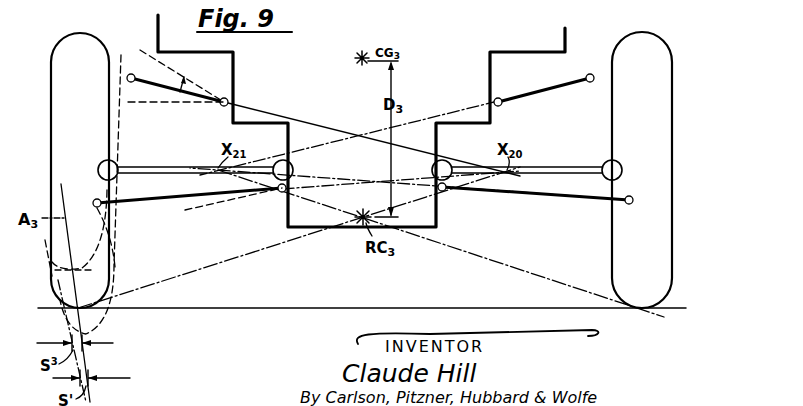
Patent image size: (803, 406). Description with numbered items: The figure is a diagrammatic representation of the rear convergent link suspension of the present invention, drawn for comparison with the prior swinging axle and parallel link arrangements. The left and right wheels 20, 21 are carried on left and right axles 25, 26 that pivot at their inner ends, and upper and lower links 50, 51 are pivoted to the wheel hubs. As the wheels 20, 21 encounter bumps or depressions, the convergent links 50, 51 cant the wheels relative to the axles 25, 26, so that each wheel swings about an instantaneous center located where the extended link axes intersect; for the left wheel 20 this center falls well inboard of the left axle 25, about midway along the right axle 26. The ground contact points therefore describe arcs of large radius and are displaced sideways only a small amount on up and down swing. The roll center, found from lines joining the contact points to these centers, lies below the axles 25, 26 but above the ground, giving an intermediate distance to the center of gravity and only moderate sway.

The left wheel 20 is at (76, 47).
The right wheel 21 is at (667, 59).
The left axle 25 is at (137, 167).
The right axle 26 is at (549, 167).
The upper link 50 is at (171, 90).
The lower link 51 is at (240, 192).